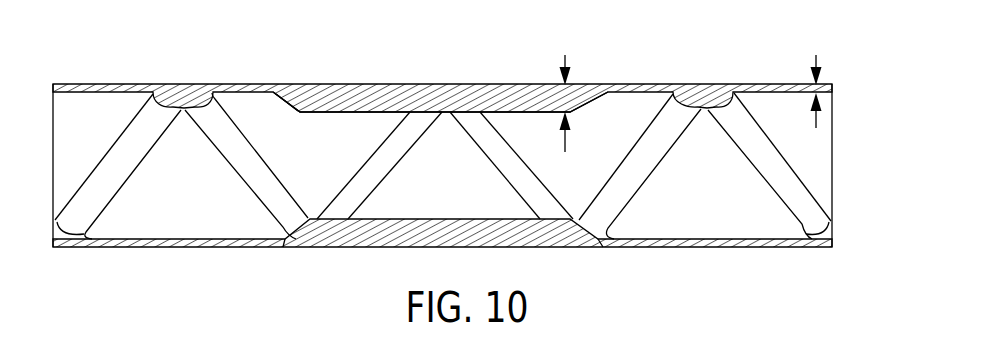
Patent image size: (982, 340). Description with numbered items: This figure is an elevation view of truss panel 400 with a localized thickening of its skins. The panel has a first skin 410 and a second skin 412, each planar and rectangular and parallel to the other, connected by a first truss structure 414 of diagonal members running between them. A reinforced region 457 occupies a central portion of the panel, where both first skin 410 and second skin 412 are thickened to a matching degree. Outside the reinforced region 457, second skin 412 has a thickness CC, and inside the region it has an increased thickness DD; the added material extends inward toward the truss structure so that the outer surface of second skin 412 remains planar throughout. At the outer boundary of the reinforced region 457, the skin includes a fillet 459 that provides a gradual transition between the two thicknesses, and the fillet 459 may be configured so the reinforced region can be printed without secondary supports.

The truss panel 400 is at (94, 60).
The first skin 410 is at (832, 248).
The second skin 412 is at (832, 87).
The first truss structure 414 is at (850, 162).
The reinforced region 457 is at (337, 96).
The fillet 459 is at (287, 116).
The increased thickness DD is at (564, 57).
The thickness CC is at (815, 57).